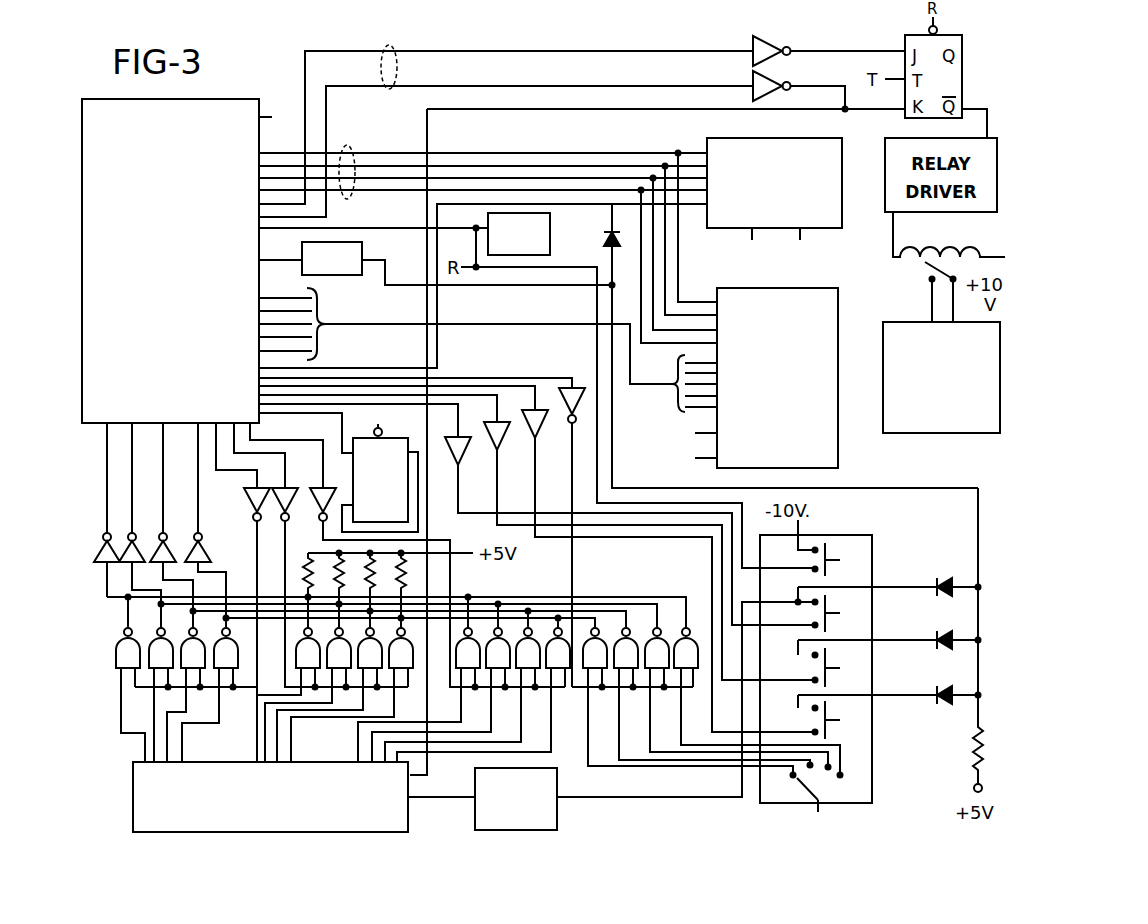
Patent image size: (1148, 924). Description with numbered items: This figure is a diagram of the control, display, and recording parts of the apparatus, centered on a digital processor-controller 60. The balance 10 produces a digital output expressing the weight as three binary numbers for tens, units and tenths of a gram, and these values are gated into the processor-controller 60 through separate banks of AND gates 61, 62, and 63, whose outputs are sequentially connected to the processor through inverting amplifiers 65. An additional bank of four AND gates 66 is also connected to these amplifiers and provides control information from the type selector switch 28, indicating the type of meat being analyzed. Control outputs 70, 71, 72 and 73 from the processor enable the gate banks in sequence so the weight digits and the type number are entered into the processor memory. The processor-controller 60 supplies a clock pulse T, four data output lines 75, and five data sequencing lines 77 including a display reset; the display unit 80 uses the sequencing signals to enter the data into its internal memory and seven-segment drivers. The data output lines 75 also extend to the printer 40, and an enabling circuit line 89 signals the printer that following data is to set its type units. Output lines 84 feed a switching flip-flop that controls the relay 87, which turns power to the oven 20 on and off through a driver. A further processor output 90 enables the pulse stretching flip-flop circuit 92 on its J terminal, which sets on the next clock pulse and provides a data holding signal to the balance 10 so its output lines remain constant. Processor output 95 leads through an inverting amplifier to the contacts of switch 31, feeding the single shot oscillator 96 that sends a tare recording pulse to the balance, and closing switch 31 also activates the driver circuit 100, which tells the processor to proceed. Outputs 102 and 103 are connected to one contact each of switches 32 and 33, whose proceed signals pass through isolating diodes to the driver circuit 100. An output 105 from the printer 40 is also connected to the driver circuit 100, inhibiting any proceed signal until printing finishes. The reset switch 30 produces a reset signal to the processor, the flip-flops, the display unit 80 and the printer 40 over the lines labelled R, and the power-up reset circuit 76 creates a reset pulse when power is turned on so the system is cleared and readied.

The processor-controller 60 is at (180, 231).
The output lines 84 is at (388, 47).
The data output lines 75 is at (346, 150).
The enabling circuit line 89 is at (688, 222).
The printer 40 is at (790, 216).
The printer output 105 is at (607, 234).
The power-up reset circuit 76 is at (553, 250).
The driver circuit 100 is at (350, 255).
The data sequencing lines 77 is at (378, 323).
The display unit 80 is at (763, 388).
The relay 87 is at (918, 285).
The oven 20 is at (956, 414).
The control output 73 is at (541, 377).
The processor output 103 is at (515, 381).
The processor output 102 is at (450, 393).
The processor output 95 is at (442, 402).
The processor output 90 is at (342, 432).
The pulse stretching flip-flop circuit 92 is at (367, 499).
The inverting amplifiers 65 is at (232, 545).
The control output 71 is at (233, 438).
The control output 70 is at (232, 474).
The control output 72 is at (322, 486).
The bank of AND gates 61 is at (112, 652).
The bank of AND gates 62 is at (418, 632).
The bank of AND gates 63 is at (572, 630).
The bank of four AND gates 66 is at (695, 622).
The balance 10 is at (133, 800).
The single shot oscillator 96 is at (475, 806).
The reset switch 30 is at (830, 549).
The switch 31 is at (832, 604).
The switch 32 is at (832, 657).
The switch 33 is at (832, 710).
The type selector switch 28 is at (803, 791).